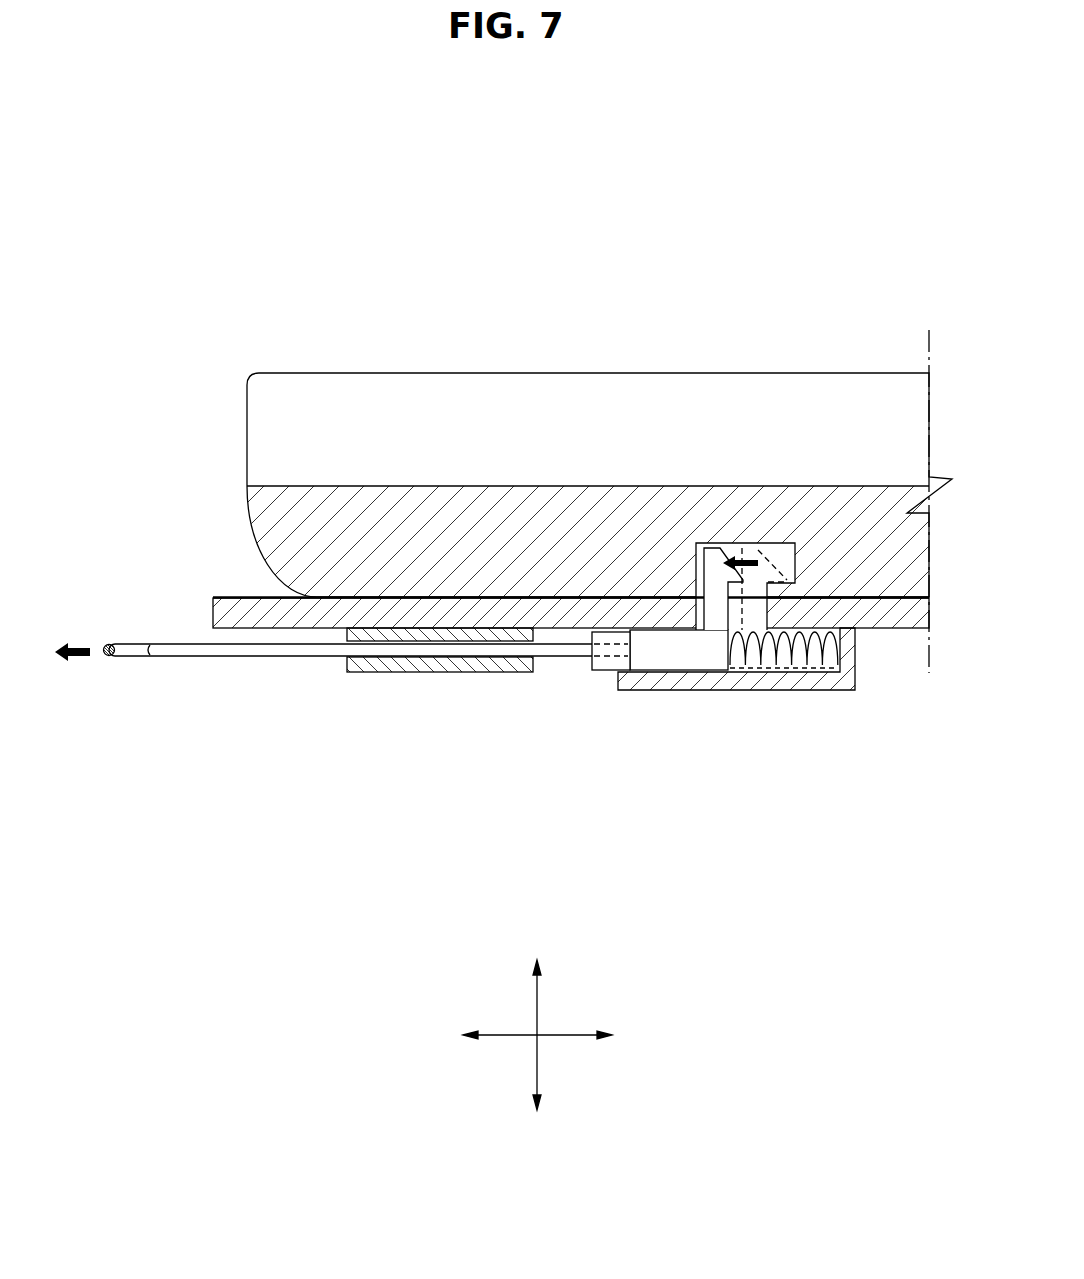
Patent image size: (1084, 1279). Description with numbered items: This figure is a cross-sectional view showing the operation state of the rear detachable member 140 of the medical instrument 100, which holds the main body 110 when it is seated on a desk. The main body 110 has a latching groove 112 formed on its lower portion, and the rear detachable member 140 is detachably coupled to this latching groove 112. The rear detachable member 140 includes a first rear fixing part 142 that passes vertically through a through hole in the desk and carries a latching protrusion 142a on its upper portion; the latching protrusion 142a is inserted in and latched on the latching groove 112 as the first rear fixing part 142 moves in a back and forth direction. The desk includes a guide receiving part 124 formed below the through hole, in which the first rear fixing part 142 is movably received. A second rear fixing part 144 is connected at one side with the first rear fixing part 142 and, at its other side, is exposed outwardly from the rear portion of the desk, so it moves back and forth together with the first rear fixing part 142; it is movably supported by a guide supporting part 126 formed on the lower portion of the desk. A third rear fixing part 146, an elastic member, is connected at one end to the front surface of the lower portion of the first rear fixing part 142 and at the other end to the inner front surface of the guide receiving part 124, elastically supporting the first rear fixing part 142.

The medical instrument 100 is at (246, 350).
The main body 110 is at (253, 437).
The latching groove 112 is at (797, 556).
The guide receiving part 124 is at (740, 688).
The guide supporting part 126 is at (430, 672).
The rear detachable member 140 is at (601, 685).
The first rear fixing part 142 is at (667, 662).
The latching protrusion 142a is at (723, 553).
The second rear fixing part 144 is at (222, 657).
The third rear fixing part 146 is at (810, 657).